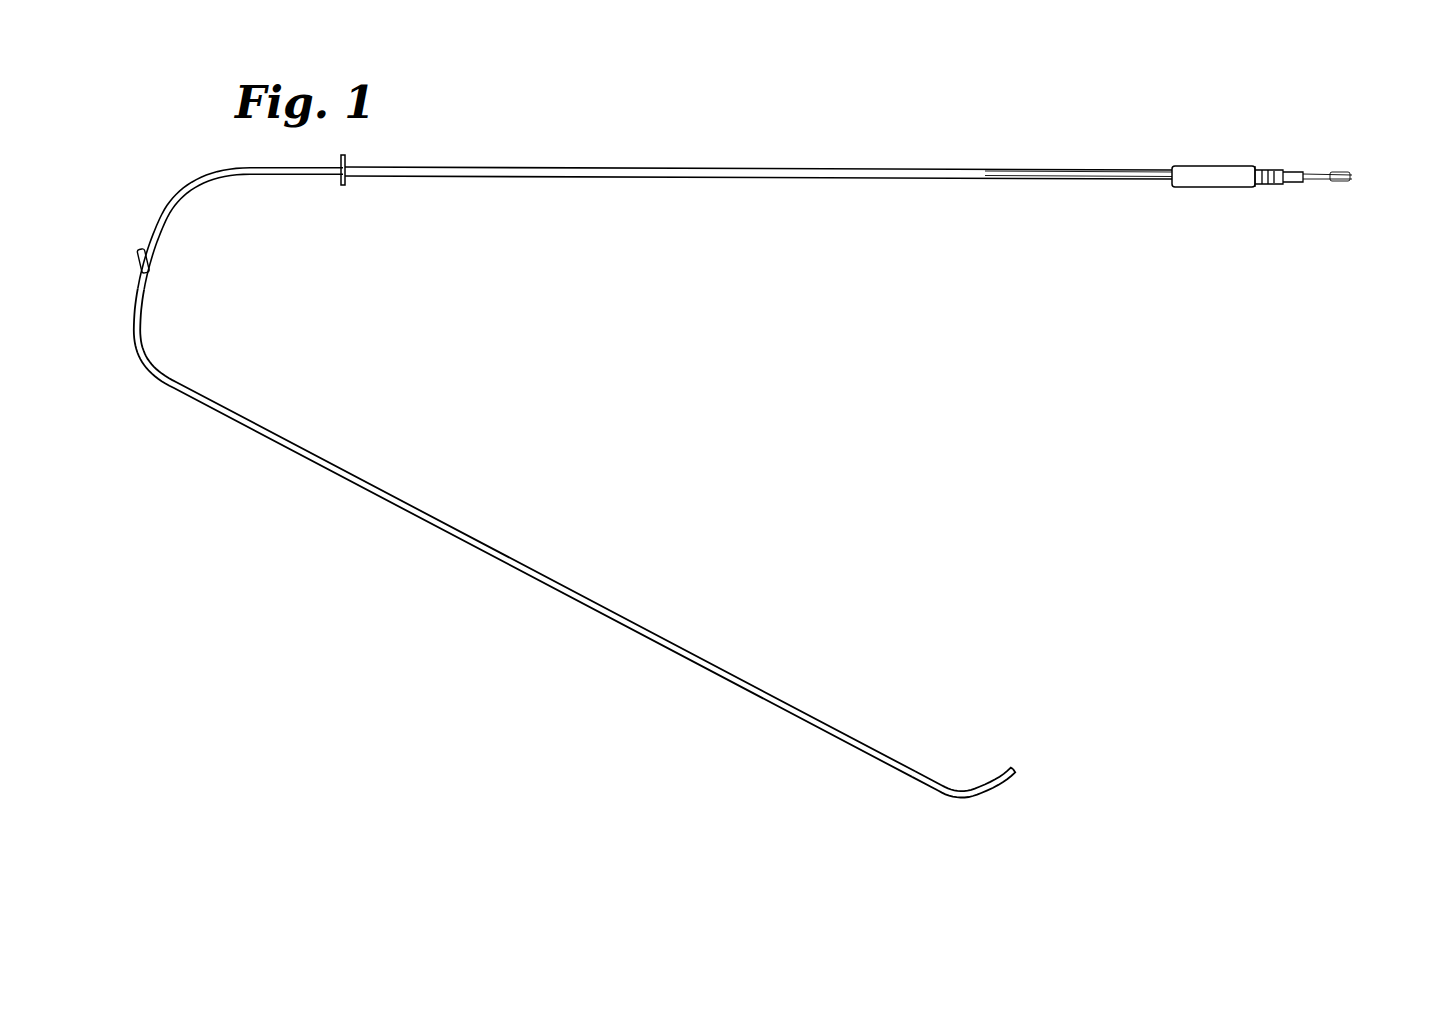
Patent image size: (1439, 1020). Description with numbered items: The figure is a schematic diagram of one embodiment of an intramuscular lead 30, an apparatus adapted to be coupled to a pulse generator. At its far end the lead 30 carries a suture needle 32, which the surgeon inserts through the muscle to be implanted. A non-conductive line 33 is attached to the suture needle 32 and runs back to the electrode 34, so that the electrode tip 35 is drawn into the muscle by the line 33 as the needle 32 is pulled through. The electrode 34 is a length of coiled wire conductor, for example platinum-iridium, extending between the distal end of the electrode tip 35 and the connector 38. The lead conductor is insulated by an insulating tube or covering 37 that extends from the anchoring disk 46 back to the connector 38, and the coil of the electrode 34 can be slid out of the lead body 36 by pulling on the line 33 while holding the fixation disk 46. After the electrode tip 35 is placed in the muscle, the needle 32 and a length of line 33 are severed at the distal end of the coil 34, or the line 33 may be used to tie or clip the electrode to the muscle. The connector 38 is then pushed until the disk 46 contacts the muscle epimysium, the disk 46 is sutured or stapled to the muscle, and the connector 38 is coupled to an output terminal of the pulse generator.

The intramuscular lead 30 is at (744, 156).
The suture needle 32 is at (972, 792).
The non-conductive line 33 is at (542, 576).
The electrode 34 is at (172, 203).
The electrode tip 35 is at (147, 268).
The lead body 36 is at (619, 192).
The insulating tube 37 is at (887, 170).
The connector 38 is at (1270, 170).
The anchoring disk 46 is at (345, 158).